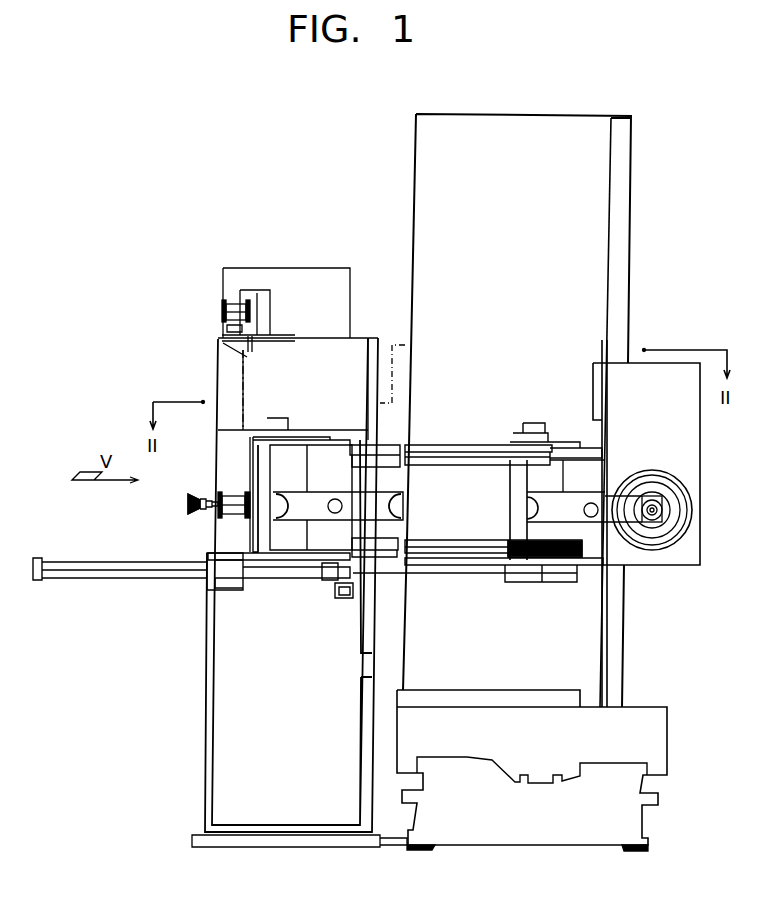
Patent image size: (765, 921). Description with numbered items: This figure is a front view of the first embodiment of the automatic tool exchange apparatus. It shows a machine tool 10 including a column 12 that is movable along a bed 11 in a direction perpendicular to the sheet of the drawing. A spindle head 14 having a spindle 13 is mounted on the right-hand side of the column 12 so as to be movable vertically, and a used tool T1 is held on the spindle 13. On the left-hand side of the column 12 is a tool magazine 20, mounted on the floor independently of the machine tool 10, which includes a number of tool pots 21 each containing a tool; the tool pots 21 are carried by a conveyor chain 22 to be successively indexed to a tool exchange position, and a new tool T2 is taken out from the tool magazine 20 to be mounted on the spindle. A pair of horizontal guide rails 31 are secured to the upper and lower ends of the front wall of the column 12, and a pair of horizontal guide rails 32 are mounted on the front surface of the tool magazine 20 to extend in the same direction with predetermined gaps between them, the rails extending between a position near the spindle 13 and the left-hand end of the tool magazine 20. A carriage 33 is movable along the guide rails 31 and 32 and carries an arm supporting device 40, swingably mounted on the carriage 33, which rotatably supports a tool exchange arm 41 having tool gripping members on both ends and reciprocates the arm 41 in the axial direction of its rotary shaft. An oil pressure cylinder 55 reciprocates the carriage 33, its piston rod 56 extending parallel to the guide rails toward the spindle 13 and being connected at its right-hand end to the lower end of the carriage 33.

The machine tool 10 is at (644, 289).
The bed 11 is at (633, 830).
The column 12 is at (600, 211).
The spindle 13 is at (667, 521).
The spindle head 14 is at (686, 447).
The tool magazine 20 is at (210, 439).
The tool pots 21 is at (224, 310).
The conveyor chain 22 is at (217, 380).
The horizontal guide rails 31 is at (430, 455).
The horizontal guide rails 32 is at (386, 455).
The carriage 33 is at (512, 508).
The arm supporting device 40 is at (333, 445).
The tool exchange arm 41 is at (381, 500).
The oil pressure cylinder 55 is at (227, 578).
The piston rod 56 is at (343, 598).
The used tool T1 is at (666, 503).
The new tool T2 is at (195, 512).